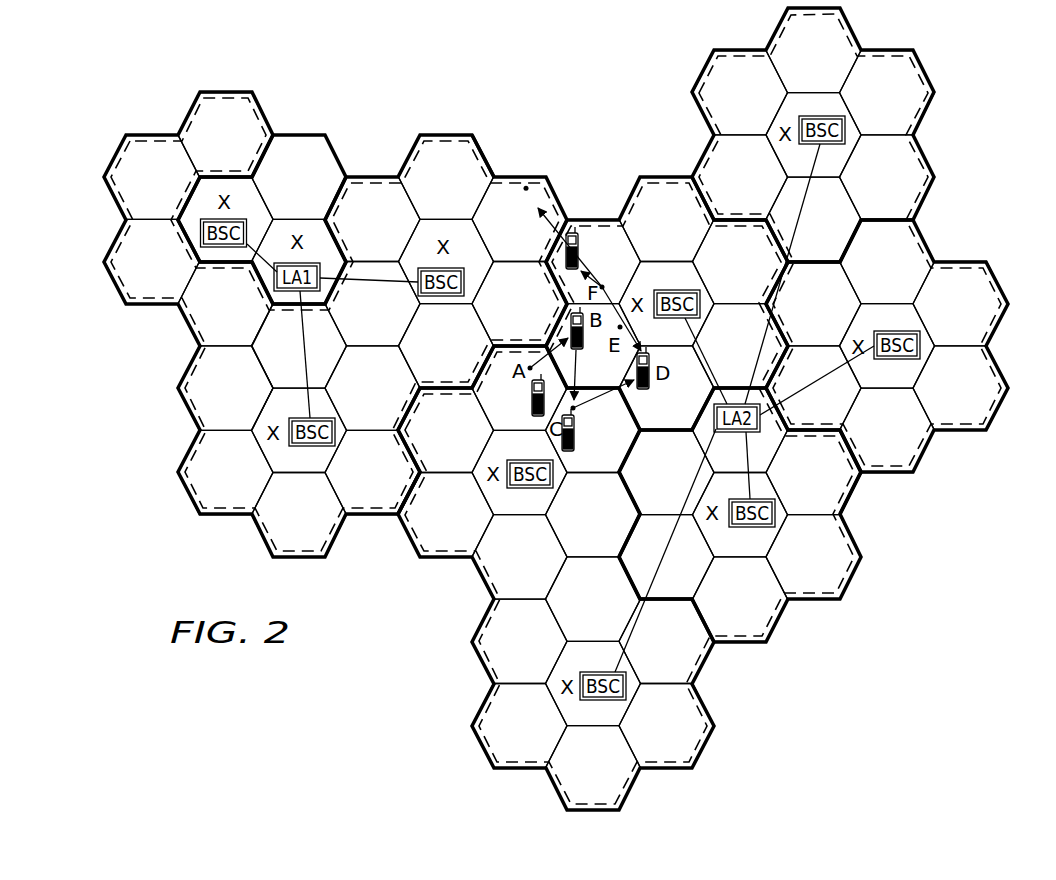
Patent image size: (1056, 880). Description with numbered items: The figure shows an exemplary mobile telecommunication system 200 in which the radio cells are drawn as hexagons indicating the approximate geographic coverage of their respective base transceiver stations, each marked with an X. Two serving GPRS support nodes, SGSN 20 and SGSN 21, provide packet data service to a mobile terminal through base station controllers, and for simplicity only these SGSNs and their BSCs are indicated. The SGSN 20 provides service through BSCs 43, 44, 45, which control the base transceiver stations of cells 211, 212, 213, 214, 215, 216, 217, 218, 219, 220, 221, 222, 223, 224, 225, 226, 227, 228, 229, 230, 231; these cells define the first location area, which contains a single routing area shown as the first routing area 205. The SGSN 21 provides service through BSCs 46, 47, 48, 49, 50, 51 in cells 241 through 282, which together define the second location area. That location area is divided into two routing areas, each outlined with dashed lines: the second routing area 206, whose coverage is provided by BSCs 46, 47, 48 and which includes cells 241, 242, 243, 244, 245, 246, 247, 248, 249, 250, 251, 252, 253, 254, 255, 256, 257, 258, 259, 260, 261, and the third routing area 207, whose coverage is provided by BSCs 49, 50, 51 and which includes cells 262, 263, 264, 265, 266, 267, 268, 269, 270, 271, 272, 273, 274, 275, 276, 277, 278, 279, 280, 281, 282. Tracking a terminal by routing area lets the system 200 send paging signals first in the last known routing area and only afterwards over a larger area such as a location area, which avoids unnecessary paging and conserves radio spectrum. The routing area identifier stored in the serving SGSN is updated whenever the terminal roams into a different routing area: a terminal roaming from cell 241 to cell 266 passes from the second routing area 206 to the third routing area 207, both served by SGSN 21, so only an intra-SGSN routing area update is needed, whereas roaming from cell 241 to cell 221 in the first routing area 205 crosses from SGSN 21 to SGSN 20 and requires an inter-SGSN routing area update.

The mobile telecommunication system 200 is at (352, 80).
The routing area RA1 205 is at (118, 284).
The routing area RA2 206 is at (736, 641).
The routing area RA3 207 is at (922, 74).
The SGSN 20 is at (272, 308).
The SGSN 21 is at (858, 477).
The BSC 43 is at (207, 219).
The BSC 44 is at (440, 268).
The BSC 45 is at (312, 446).
The BSC 46 is at (530, 488).
The BSC 47 is at (603, 700).
The BSC 48 is at (775, 512).
The BSC 49 is at (660, 300).
The BSC 50 is at (800, 122).
The BSC 51 is at (921, 343).
The cell 211 is at (225, 135).
The cell 212 is at (299, 177).
The cell 213 is at (334, 200).
The cell 214 is at (225, 304).
The cell 215 is at (152, 261).
The cell 216 is at (152, 177).
The cell 217 is at (127, 224).
The cell 218 is at (446, 177).
The cell 219 is at (519, 200).
The cell 220 is at (519, 304).
The cell 221 is at (446, 346).
The cell 222 is at (372, 304).
The cell 223 is at (372, 219).
The cell 224 is at (476, 147).
The cell 225 is at (299, 346).
The cell 226 is at (372, 388).
The cell 227 is at (372, 472).
The cell 228 is at (299, 515).
The cell 229 is at (225, 472).
The cell 230 is at (225, 388).
The cell 231 is at (258, 436).
The cell 241 is at (519, 388).
The cell 242 is at (593, 430).
The cell 243 is at (593, 515).
The cell 244 is at (519, 557).
The cell 245 is at (446, 515).
The cell 246 is at (446, 430).
The cell 247 is at (412, 521).
The cell 248 is at (593, 599).
The cell 249 is at (666, 641).
The cell 250 is at (666, 726).
The cell 251 is at (593, 768).
The cell 252 is at (519, 726).
The cell 253 is at (519, 641).
The cell 254 is at (552, 680).
The cell 255 is at (740, 430).
The cell 256 is at (813, 472).
The cell 257 is at (813, 557).
The cell 258 is at (740, 599).
The cell 259 is at (666, 557).
The cell 260 is at (666, 472).
The cell 261 is at (777, 606).
The cell 262 is at (666, 219).
The cell 263 is at (740, 261).
The cell 264 is at (740, 346).
The cell 265 is at (666, 388).
The cell 266 is at (593, 346).
The cell 267 is at (593, 261).
The cell 268 is at (687, 277).
The cell 269 is at (813, 50).
The cell 270 is at (887, 92).
The cell 271 is at (887, 177).
The cell 272 is at (813, 219).
The cell 273 is at (740, 177).
The cell 274 is at (740, 92).
The cell 275 is at (840, 158).
The cell 276 is at (887, 261).
The cell 277 is at (960, 304).
The cell 278 is at (960, 388).
The cell 279 is at (887, 430).
The cell 280 is at (813, 388).
The cell 281 is at (813, 304).
The cell 282 is at (932, 436).